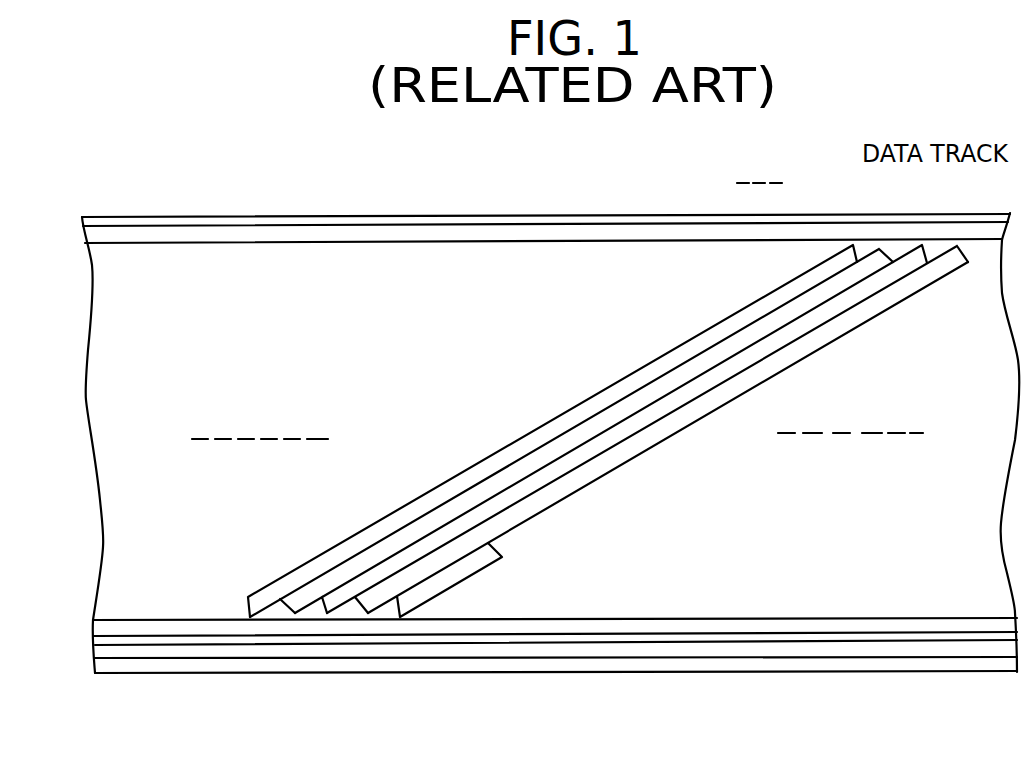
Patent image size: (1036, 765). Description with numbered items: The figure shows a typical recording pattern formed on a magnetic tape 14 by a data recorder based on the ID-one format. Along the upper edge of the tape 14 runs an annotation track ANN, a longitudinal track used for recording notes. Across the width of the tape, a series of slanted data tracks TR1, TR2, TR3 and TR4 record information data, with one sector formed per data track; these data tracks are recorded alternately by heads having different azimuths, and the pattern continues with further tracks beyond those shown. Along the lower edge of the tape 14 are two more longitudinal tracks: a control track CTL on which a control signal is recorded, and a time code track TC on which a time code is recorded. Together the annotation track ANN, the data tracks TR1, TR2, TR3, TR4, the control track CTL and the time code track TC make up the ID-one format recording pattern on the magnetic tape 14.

The magnetic tape 14 is at (287, 142).
The annotation track ANN is at (600, 240).
The data track TR1 is at (858, 241).
The data track TR2 is at (888, 252).
The data track TR3 is at (935, 252).
The data track TR4 is at (968, 257).
The control track CTL is at (703, 627).
The time code track TC is at (743, 650).